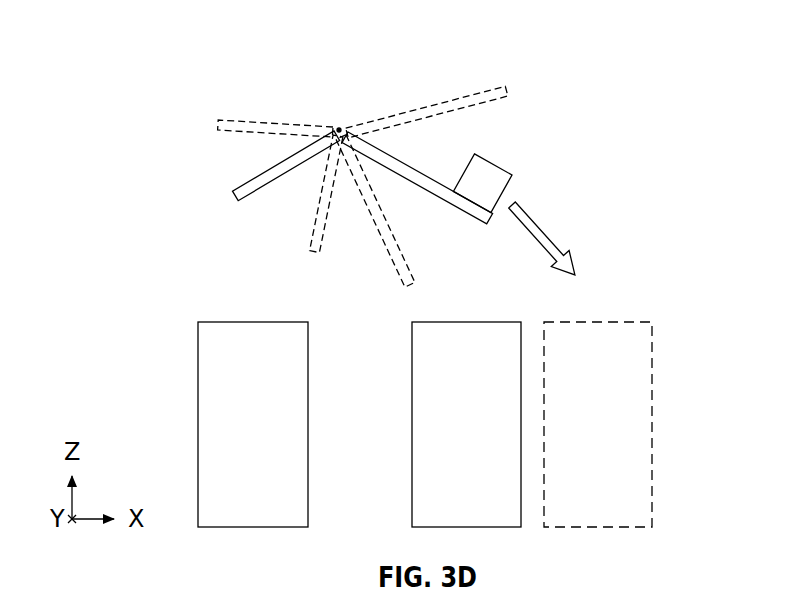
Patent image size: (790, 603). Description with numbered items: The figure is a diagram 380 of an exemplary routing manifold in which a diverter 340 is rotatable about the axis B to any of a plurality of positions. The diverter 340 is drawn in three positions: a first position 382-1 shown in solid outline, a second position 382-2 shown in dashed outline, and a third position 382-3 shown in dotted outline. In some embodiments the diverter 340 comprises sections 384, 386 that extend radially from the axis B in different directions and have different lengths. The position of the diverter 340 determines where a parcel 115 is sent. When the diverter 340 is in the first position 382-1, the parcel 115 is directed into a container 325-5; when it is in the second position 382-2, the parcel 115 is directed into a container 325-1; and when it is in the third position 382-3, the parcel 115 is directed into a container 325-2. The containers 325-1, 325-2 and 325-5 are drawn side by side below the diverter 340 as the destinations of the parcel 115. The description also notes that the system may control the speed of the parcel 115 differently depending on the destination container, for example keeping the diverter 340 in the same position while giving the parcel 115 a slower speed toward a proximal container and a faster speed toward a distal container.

The diagram 380 is at (613, 50).
The axis B is at (337, 124).
The diverter 340 is at (206, 166).
The first position 382-1 is at (238, 190).
The second position 382-2 is at (311, 243).
The third position 382-3 is at (401, 268).
The section 384 is at (243, 153).
The section 386 is at (424, 156).
The parcel 115 is at (497, 168).
The container 325-1 is at (285, 438).
The container 325-2 is at (500, 438).
The container 325-5 is at (632, 438).